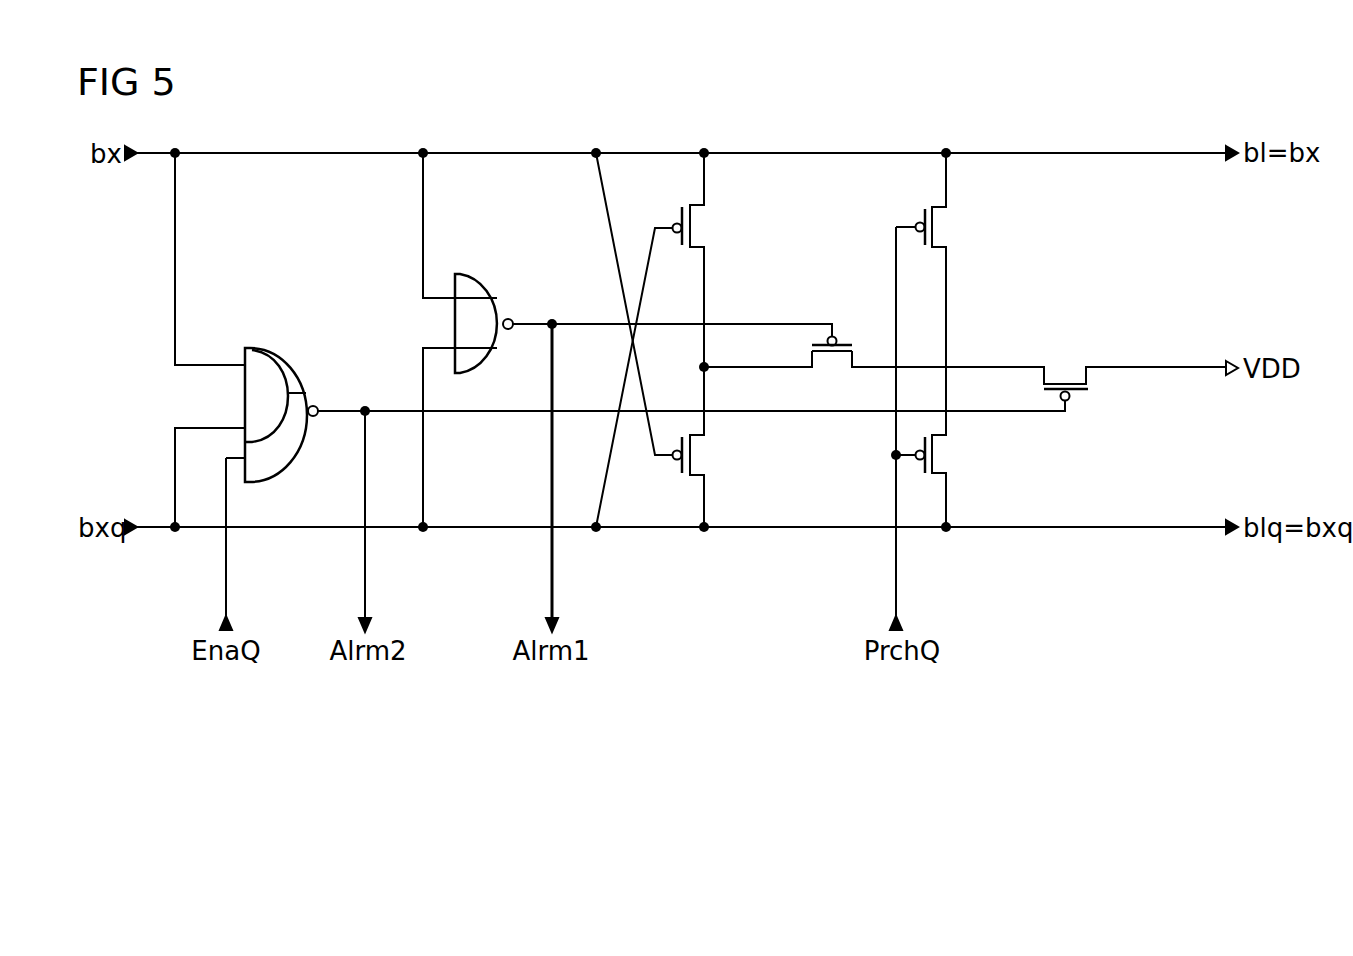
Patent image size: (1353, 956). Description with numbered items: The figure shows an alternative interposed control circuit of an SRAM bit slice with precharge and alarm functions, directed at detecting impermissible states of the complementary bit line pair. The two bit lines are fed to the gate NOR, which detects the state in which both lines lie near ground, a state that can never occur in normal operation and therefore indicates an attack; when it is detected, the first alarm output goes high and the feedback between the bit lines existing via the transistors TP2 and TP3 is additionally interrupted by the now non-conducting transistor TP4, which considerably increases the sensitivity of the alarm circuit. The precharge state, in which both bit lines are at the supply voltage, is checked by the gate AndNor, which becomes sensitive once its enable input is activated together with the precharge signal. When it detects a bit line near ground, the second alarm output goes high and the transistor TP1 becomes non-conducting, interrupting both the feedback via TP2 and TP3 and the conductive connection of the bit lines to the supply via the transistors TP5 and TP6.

The gate AndNor is at (264, 346).
The gate NOR is at (470, 273).
The transistor TP1 is at (1066, 383).
The transistor TP2 is at (693, 225).
The transistor TP3 is at (693, 450).
The transistor TP4 is at (843, 344).
The transistor TP5 is at (935, 223).
The transistor TP6 is at (935, 450).